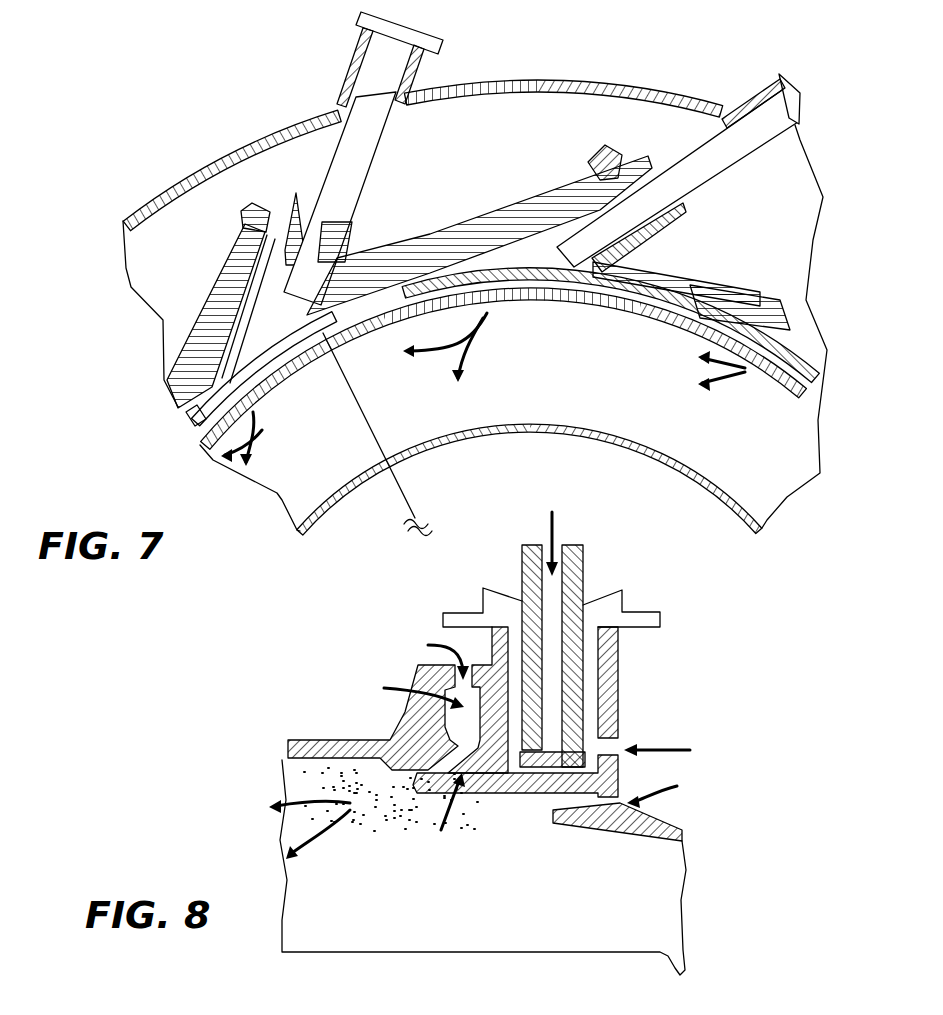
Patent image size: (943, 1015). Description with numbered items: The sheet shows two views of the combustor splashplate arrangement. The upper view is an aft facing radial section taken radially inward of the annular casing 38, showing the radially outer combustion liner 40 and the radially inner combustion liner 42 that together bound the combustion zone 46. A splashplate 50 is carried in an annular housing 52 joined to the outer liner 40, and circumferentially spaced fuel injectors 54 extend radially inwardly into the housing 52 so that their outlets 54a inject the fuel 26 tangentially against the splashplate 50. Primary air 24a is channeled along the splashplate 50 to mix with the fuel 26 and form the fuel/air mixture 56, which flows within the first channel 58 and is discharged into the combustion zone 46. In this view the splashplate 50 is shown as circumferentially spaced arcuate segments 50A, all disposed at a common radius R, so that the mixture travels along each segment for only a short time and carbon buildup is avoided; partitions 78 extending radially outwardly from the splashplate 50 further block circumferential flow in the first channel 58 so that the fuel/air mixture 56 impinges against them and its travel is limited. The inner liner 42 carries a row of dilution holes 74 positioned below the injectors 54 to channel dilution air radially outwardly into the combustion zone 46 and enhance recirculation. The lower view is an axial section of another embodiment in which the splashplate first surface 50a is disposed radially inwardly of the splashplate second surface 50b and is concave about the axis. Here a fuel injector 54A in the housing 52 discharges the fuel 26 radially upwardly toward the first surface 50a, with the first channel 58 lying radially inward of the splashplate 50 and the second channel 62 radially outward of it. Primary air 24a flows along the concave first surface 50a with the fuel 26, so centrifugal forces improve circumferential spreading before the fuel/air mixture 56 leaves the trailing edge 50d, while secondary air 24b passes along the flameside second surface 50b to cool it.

In FIG. 7, the annular casing 38 is at (628, 92).
In FIG. 7, the radially inner combustion liner 42 is at (345, 507).
In FIG. 7, the dilution holes 74 is at (537, 433).
In FIG. 7, the inner radius R is at (404, 505).
In FIG. 7, the second channel 62 is at (808, 405).
In FIG. 8, the second channel 62 is at (406, 692).
In FIG. 7, the splashplate 50 is at (788, 374).
In FIG. 8, the splashplate 50 is at (470, 794).
In FIG. 7, the arcuate segments 50A is at (190, 424).
In FIG. 7, the radially outer combustion liner 40 is at (206, 440).
In FIG. 8, the radially outer combustion liner 40 is at (663, 807).
In FIG. 7, the housing 52 is at (243, 272).
In FIG. 8, the housing 52 is at (312, 740).
In FIG. 7, the fuel injectors 54 is at (372, 148).
In FIG. 7, the partitions 78 is at (655, 268).
In FIG. 7, the first channel 58 is at (762, 300).
In FIG. 8, the first channel 58 is at (445, 822).
In FIG. 7, the fuel/air mixture 56 is at (440, 362).
In FIG. 8, the fuel/air mixture 56 is at (338, 828).
In FIG. 8, the combustion zone 46 is at (509, 884).
In FIG. 8, the fuel injector 54A is at (586, 577).
In FIG. 8, the outlet 54a is at (513, 787).
In FIG. 8, the fuel 26 is at (556, 528).
In FIG. 8, the primary air 24a is at (668, 745).
In FIG. 8, the secondary air 24b is at (440, 640).
In FIG. 8, the splashplate second surface 50b is at (430, 747).
In FIG. 8, the trailing edge 50d is at (417, 792).
In FIG. 8, the splashplate first surface 50a is at (430, 802).